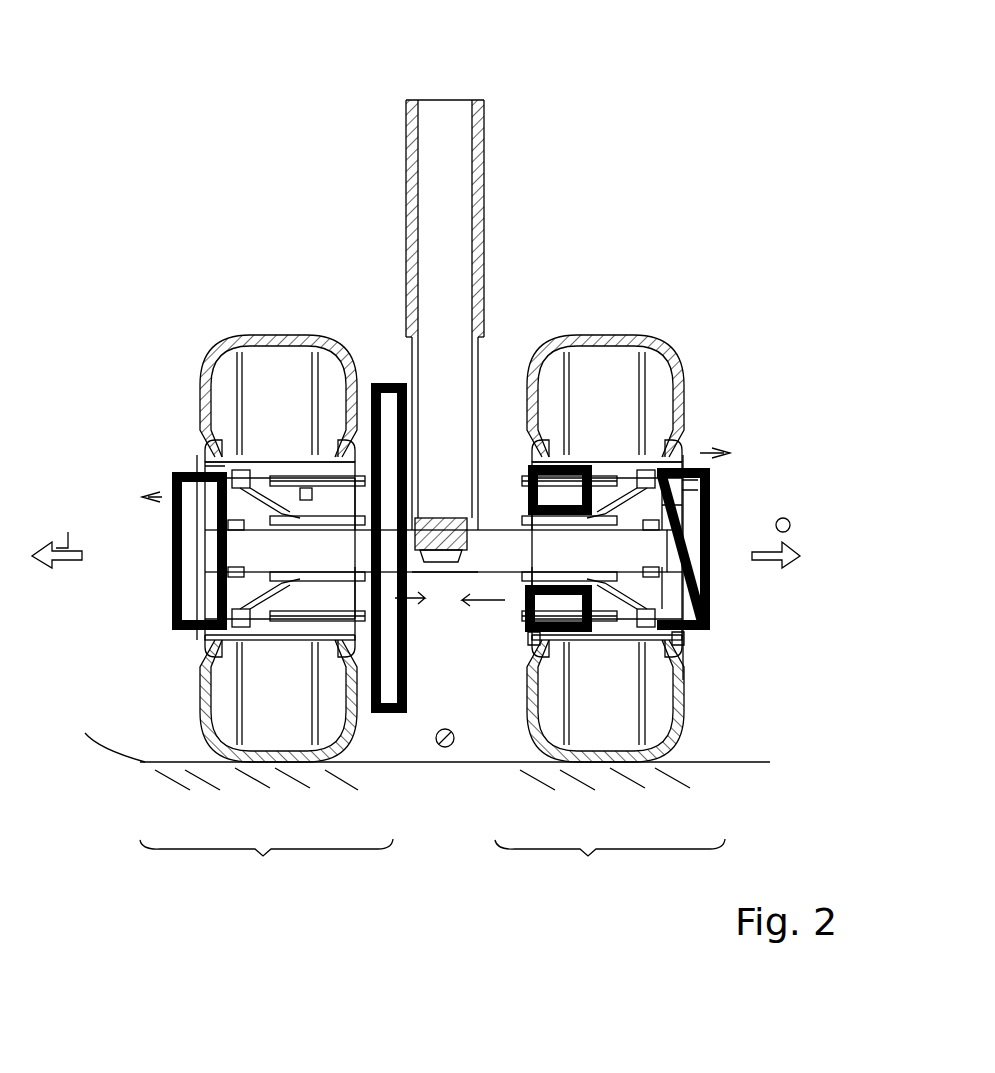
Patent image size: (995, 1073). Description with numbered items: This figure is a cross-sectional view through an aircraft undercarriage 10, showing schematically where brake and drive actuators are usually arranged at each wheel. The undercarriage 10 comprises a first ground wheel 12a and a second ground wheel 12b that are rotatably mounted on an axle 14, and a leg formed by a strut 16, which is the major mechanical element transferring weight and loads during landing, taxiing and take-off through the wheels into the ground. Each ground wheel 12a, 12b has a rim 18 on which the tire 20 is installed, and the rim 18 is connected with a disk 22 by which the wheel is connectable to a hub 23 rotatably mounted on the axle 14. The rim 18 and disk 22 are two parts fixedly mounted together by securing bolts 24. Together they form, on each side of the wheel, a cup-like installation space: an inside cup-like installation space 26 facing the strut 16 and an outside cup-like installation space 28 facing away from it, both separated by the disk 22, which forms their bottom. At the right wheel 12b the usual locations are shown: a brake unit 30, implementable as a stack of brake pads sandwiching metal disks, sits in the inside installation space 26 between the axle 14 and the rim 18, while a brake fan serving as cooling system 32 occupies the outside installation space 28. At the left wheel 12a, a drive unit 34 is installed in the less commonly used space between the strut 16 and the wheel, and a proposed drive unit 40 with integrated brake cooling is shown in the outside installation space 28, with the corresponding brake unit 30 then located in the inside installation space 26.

The undercarriage 10 is at (612, 126).
The first ground wheel 12a is at (229, 328).
The second ground wheel 12b is at (660, 330).
The axle 14 is at (512, 564).
The strut 16 is at (457, 226).
The rim 18 is at (528, 640).
The tire 20 is at (288, 397).
The disk 22 is at (192, 630).
The hub 23 is at (694, 585).
The securing bolts 24 is at (713, 490).
The inside cup-like installation space 26 is at (318, 498).
The outside cup-like installation space 28 is at (195, 465).
The brake unit 30 is at (558, 608).
The cooling system 32 is at (713, 525).
The drive unit 34 is at (393, 383).
The drive unit 40 is at (172, 598).